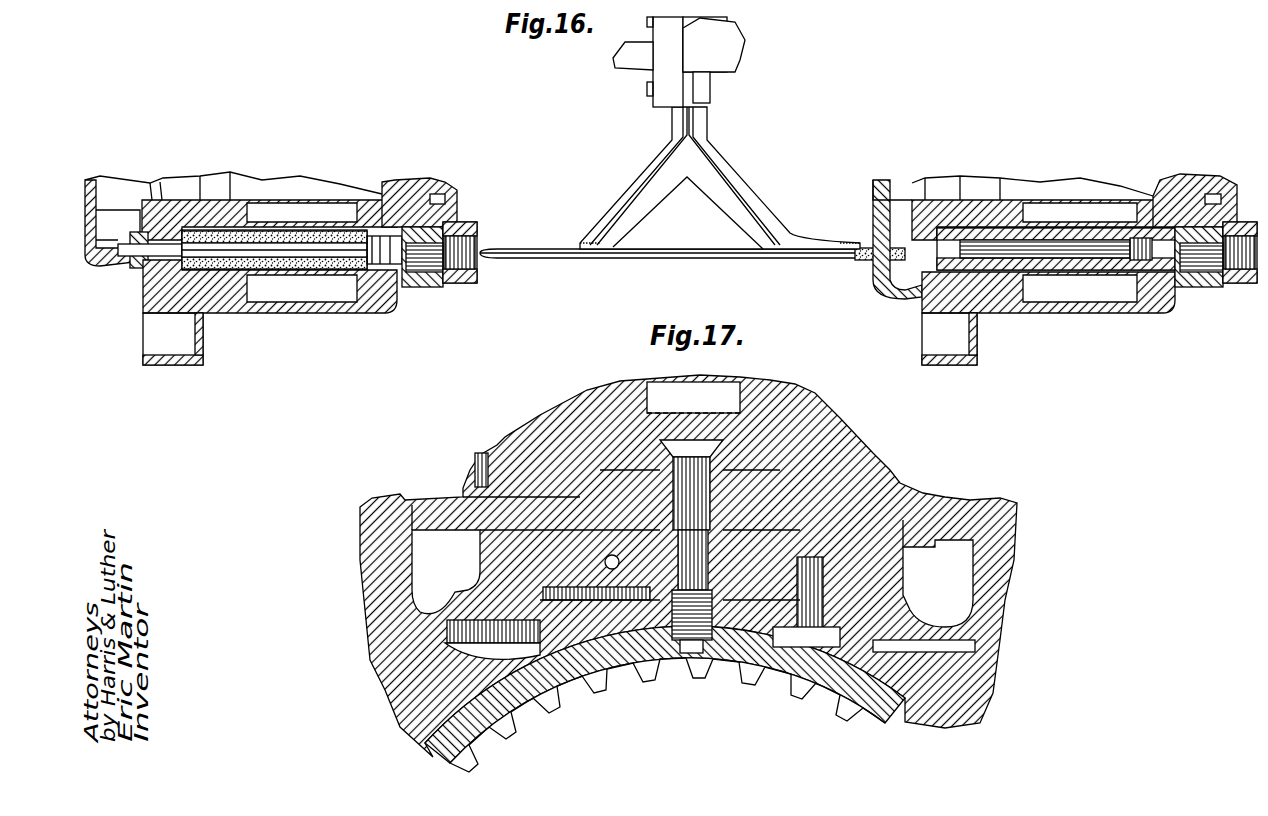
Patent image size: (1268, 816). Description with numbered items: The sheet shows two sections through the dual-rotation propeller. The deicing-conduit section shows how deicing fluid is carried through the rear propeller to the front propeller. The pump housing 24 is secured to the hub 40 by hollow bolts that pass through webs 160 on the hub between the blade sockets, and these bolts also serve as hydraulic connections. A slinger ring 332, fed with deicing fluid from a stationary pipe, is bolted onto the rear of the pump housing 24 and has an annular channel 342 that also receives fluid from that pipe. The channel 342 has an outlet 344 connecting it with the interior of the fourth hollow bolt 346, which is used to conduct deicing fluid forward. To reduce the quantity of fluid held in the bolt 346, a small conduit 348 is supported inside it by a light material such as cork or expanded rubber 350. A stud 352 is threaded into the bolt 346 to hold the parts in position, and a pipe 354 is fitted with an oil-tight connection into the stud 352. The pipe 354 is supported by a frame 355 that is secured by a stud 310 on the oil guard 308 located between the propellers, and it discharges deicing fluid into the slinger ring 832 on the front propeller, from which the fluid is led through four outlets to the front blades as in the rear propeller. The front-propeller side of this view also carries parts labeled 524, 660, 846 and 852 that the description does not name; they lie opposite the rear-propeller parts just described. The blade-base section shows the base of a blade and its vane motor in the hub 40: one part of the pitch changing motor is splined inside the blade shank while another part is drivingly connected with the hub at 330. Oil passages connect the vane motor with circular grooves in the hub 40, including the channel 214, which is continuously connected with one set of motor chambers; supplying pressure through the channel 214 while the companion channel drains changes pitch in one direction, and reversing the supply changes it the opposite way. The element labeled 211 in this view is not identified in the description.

In FIG. 16, the pump housing 24 is at (186, 367).
In FIG. 16, the webs 160 is at (420, 290).
In FIG. 16, the oil guard 308 is at (735, 46).
In FIG. 16, the stud 310 is at (712, 86).
In FIG. 16, the slinger ring 332 is at (106, 262).
In FIG. 16, the annular channel 342 is at (207, 205).
In FIG. 16, the outlet 344 is at (136, 270).
In FIG. 16, the fourth hollow bolt 346 is at (264, 280).
In FIG. 16, the small conduit 348 is at (328, 252).
In FIG. 16, the cork or expanded rubber 350 is at (300, 262).
In FIG. 16, the stud 352 is at (466, 285).
In FIG. 16, the pipe 354 is at (670, 259).
In FIG. 16, the frame 355 is at (755, 187).
In FIG. 16, the foot / mounting base 524 is at (945, 367).
In FIG. 16, the nut 660 is at (1193, 290).
In FIG. 16, the slinger ring 832 is at (895, 294).
In FIG. 16, the housing 846 is at (1080, 292).
In FIG. 16, the cap 852 is at (1240, 286).
In FIG. 17, the hub 40 is at (397, 698).
In FIG. 17, the ring gear teeth 211 is at (612, 680).
In FIG. 17, the channel 214 is at (840, 667).
In FIG. 17, the driving connection 330 is at (473, 613).